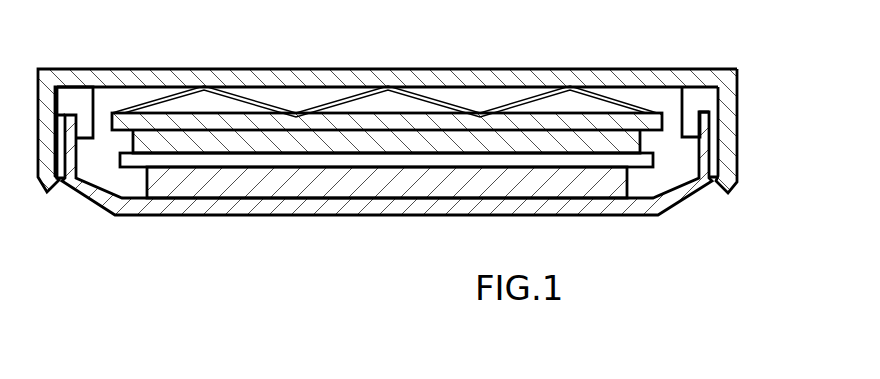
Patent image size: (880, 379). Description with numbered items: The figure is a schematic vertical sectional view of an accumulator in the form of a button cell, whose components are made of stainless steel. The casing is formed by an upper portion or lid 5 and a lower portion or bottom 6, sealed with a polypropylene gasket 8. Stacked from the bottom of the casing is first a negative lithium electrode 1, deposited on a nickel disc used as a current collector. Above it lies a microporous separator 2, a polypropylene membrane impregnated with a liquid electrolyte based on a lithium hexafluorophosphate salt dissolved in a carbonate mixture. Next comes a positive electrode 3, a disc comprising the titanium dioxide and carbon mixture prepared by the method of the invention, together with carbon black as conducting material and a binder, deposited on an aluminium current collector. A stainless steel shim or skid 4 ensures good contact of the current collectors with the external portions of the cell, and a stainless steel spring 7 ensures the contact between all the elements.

The negative lithium electrode 1 is at (363, 185).
The microporous separator 2 is at (240, 158).
The positive electrode 3 is at (345, 140).
The stainless steel shim 4 is at (453, 112).
The upper casing portion 5 is at (163, 70).
The lower casing portion 6 is at (100, 202).
The spring 7 is at (632, 108).
The polypropylene gasket 8 is at (711, 125).